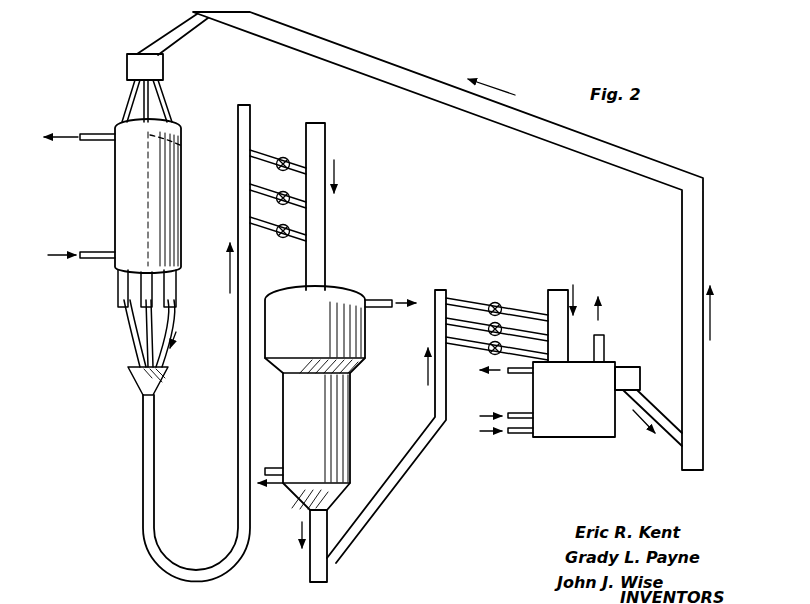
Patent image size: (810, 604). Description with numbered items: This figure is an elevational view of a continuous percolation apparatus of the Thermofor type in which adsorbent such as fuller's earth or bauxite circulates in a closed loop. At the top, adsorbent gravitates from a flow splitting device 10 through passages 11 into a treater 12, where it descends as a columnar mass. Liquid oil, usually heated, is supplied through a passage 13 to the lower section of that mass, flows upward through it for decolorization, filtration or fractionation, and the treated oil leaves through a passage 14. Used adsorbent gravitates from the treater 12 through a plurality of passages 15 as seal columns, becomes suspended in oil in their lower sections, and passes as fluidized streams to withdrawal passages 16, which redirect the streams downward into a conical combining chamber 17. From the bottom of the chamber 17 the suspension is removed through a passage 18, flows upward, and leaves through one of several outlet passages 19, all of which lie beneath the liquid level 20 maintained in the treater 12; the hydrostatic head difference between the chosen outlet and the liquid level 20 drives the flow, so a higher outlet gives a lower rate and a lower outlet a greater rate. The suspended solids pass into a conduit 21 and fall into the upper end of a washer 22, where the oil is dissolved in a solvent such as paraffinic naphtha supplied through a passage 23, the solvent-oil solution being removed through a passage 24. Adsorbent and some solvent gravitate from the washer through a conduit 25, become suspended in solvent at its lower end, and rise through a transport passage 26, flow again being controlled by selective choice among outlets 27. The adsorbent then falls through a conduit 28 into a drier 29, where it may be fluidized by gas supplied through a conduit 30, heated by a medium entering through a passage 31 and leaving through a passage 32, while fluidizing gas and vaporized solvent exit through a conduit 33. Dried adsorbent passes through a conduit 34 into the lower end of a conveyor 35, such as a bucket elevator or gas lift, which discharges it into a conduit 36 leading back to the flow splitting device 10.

The flow splitting device 10 is at (127, 67).
The passages 11 is at (125, 98).
The treater 12 is at (115, 195).
The passage 13 is at (88, 259).
The passage 14 is at (87, 141).
The passages 15 is at (178, 280).
The withdrawal passages 16 is at (145, 348).
The conical combining chamber 17 is at (135, 385).
The passage 18 is at (143, 487).
The outlet passages 19 is at (262, 225).
The liquid level 20 is at (180, 145).
The conduit 21 is at (320, 225).
The washer 22 is at (350, 338).
The passage 23 is at (272, 466).
The passage 24 is at (379, 299).
The conduit 25 is at (310, 566).
The transport passage 26 is at (383, 490).
The outlets 27 is at (452, 330).
The conduit 28 is at (548, 298).
The drier 29 is at (570, 438).
The conduit 30 is at (516, 434).
The passage 31 is at (520, 402).
The passage 32 is at (508, 373).
The conduit 33 is at (604, 342).
The conduit 34 is at (672, 442).
The conveyor 35 is at (413, 71).
The conduit 36 is at (172, 30).